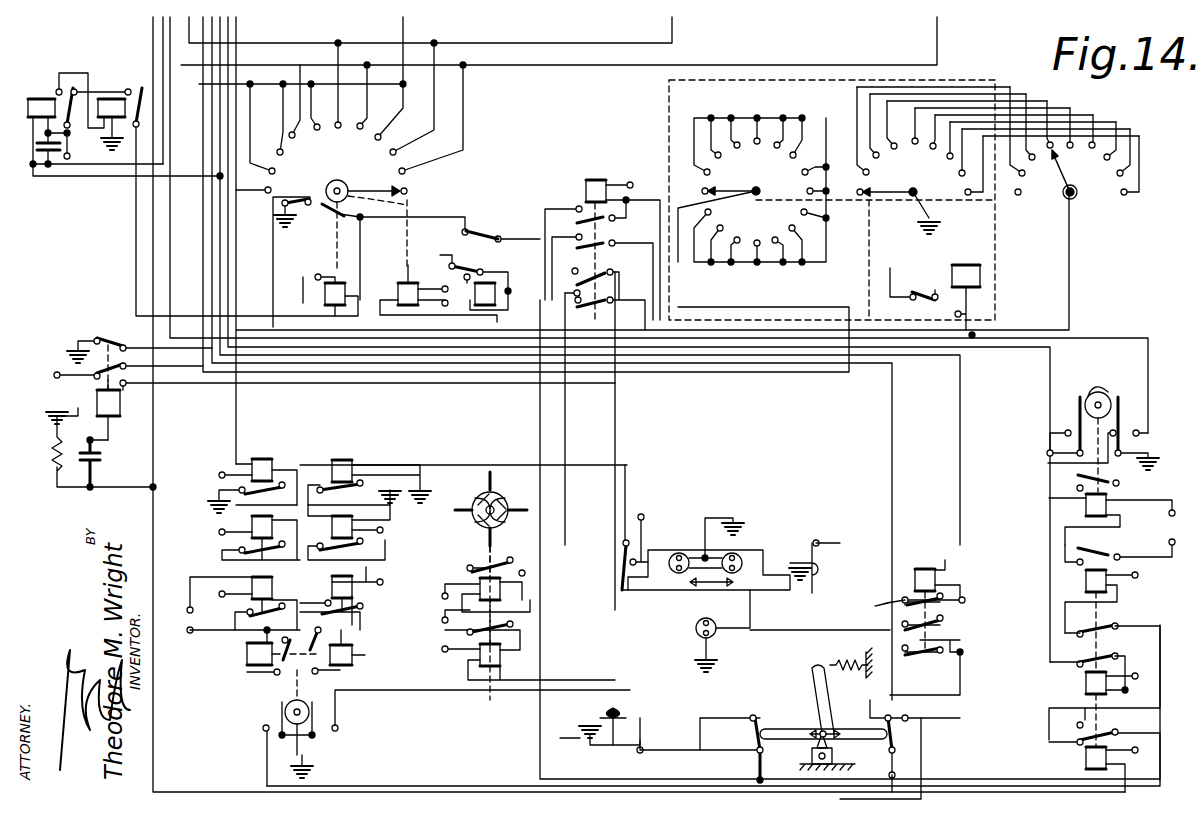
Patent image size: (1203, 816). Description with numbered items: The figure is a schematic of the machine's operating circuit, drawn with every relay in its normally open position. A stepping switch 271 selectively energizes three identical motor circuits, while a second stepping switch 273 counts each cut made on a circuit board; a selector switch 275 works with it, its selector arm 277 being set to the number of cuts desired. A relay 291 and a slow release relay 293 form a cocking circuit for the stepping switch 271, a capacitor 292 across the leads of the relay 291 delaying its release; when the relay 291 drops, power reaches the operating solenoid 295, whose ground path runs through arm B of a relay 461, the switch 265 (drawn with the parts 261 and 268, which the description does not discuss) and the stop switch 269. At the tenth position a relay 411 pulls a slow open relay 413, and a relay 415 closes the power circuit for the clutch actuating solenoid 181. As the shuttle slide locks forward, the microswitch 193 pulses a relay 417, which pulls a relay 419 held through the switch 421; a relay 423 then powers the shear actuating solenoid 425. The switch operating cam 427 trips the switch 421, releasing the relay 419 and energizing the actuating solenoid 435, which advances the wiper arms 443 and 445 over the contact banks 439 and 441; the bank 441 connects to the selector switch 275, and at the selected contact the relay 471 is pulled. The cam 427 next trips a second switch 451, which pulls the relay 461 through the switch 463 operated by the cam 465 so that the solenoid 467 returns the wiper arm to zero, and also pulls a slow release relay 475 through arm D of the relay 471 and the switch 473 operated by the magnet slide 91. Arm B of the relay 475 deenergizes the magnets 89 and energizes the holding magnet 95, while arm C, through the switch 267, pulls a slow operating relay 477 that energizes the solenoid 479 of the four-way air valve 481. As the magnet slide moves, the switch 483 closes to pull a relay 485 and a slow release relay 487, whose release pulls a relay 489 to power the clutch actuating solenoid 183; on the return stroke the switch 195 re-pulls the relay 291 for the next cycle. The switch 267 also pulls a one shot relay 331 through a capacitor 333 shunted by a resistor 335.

The relay 291 is at (45, 98).
The capacitor 292 is at (42, 176).
The slow release relay 293 is at (117, 98).
The cam 465 is at (324, 188).
The stepping switch 271 is at (392, 190).
The switch 463 is at (305, 232).
The operating solenoid 295 is at (325, 297).
The solenoid 467 is at (398, 296).
The relay 461 is at (492, 284).
The relay 471 is at (586, 180).
The stepping switch 273 is at (688, 106).
The bank of contacts 439 is at (791, 136).
The wiper arm 443 is at (748, 178).
The wiper arm 445 is at (991, 160).
The bank of contacts 441 is at (946, 207).
The selector arm 277 is at (1050, 192).
The selector switch 275 is at (1091, 204).
The actuating solenoid 435 is at (980, 276).
The one shot relay 331 is at (134, 424).
The capacitor 333 is at (100, 464).
The resistor 335 is at (48, 474).
The relay 411 is at (265, 460).
The slow open relay 413 is at (252, 516).
The relay 415 is at (248, 578).
The clutch actuating solenoid 181 is at (247, 650).
The microswitch 193 is at (278, 740).
The switch 195 is at (326, 743).
The relay 485 is at (370, 448).
The slow release relay 487 is at (382, 534).
The relay 489 is at (322, 598).
The clutch actuating solenoid 183 is at (354, 655).
The four-way air valve 481 is at (500, 500).
The air valve operating solenoid 479 is at (470, 572).
The slow operating relay 477 is at (477, 664).
The switch 483 is at (614, 563).
The magnet slide 91 is at (649, 532).
The magnets 89 is at (688, 544).
The holding magnet 95 is at (696, 630).
The switch 473 is at (817, 576).
The slow release relay 475 is at (930, 562).
The switch operating cam 427 is at (1103, 394).
The second switch 451 is at (1070, 408).
The switch 421 is at (1117, 426).
The shear actuating solenoid 425 is at (1086, 506).
The relay 423 is at (1086, 584).
The relay 419 is at (1086, 684).
The relay 417 is at (1086, 758).
The stop switch 269 is at (615, 758).
The switch 265 is at (750, 728).
The arm 261 is at (812, 672).
The spring 268 is at (830, 656).
The switch 267 is at (908, 740).